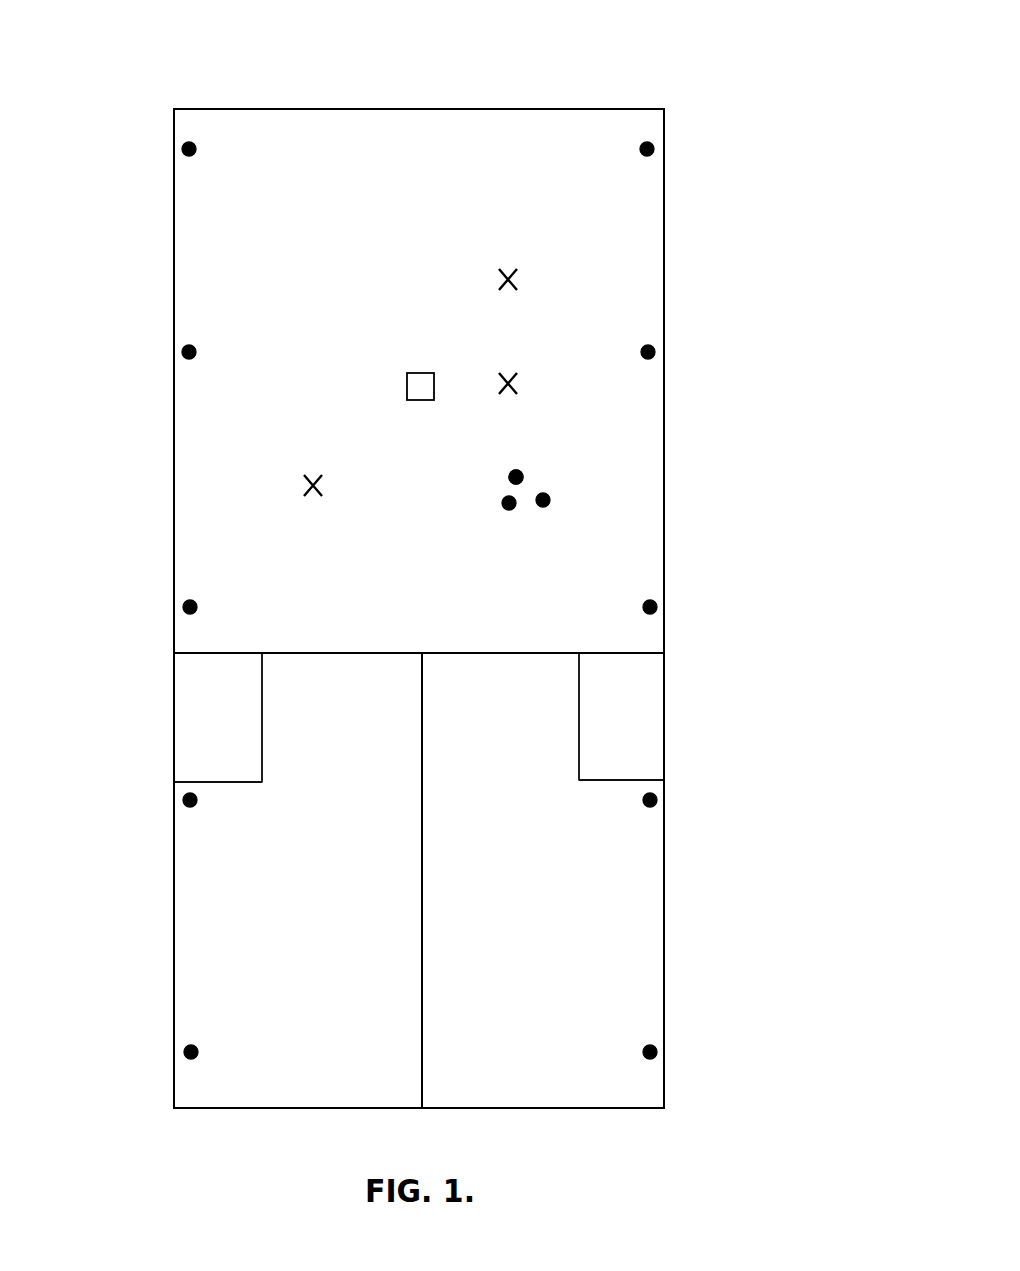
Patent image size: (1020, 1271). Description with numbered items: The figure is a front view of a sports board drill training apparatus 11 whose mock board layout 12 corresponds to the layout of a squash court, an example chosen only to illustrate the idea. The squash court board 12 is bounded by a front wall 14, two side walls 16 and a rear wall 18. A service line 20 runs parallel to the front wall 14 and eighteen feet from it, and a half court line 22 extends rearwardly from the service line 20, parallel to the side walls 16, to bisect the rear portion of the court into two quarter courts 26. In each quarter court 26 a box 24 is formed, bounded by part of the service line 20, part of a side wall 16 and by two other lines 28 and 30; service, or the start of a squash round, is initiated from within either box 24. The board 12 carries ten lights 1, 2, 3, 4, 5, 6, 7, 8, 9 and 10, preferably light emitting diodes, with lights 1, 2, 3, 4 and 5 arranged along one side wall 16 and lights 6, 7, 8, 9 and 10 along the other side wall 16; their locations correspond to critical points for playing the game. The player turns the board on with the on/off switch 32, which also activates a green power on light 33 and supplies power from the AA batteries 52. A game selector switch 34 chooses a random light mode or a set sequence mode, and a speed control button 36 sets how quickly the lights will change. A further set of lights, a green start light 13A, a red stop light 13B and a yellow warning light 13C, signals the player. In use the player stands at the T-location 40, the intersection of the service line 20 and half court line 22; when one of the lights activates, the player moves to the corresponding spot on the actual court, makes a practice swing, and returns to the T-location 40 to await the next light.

The sports board drill training apparatus 11 is at (690, 82).
The mock board layout 12 is at (458, 104).
The front wall 14 is at (308, 108).
The side walls 16 is at (172, 217).
The rear wall 18 is at (323, 1109).
The service line 20 is at (340, 651).
The half court line 22 is at (427, 933).
The boxes 24 is at (195, 733).
The quarter courts 26 is at (203, 952).
The line 28 is at (263, 745).
The line 30 is at (225, 783).
The on/off switch 32 is at (505, 266).
The game selector switch 34 is at (506, 372).
The speed control button 36 is at (306, 480).
The T-location 40 is at (422, 652).
The AA batteries 52 is at (420, 373).
The green start light 13A is at (518, 468).
The red stop light 13B is at (504, 507).
The yellow warning light 13C is at (543, 508).
The green power on light 33 is at (522, 476).
The light 1 is at (172, 148).
The light 2 is at (166, 351).
The light 3 is at (166, 605).
The light 4 is at (166, 796).
The light 5 is at (167, 1051).
The light 6 is at (678, 145).
The light 7 is at (673, 350).
The light 8 is at (674, 606).
The light 9 is at (674, 798).
The light 10 is at (683, 1051).